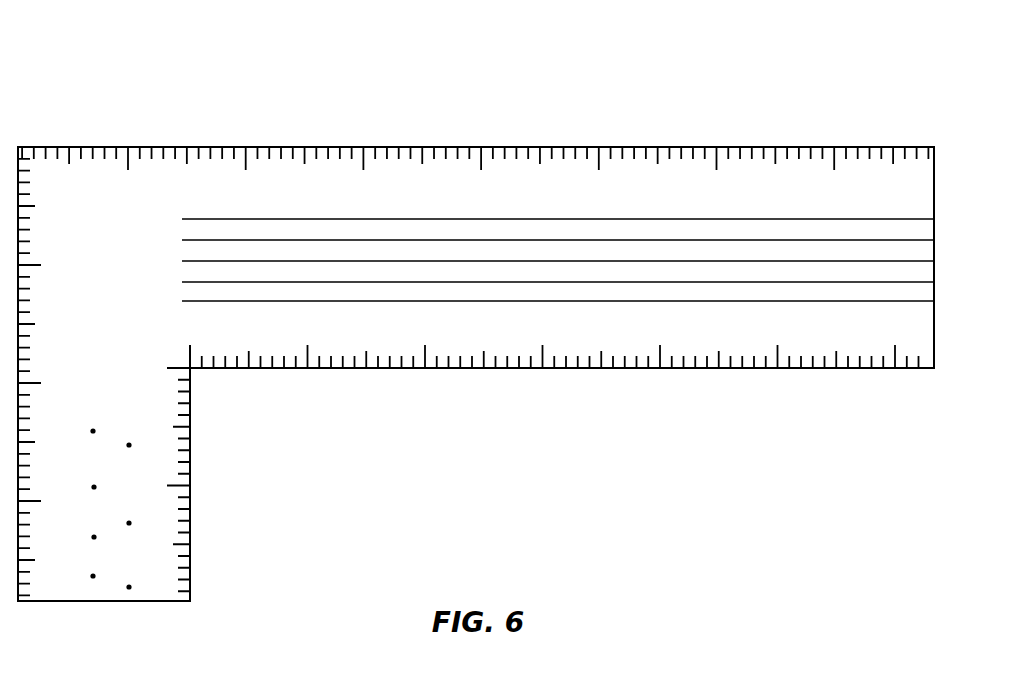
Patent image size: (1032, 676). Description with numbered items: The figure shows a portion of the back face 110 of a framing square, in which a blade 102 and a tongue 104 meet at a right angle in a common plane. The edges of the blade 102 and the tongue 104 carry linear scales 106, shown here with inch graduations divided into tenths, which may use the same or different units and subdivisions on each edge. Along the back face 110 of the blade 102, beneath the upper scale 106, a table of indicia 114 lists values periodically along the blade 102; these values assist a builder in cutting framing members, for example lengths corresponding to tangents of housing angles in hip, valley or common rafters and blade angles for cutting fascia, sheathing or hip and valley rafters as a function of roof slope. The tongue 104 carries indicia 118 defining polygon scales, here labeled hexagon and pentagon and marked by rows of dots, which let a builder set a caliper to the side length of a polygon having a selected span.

The blade 102 is at (318, 130).
The tongue 104 is at (198, 547).
The linear scales 106 is at (662, 147).
The back face 110 is at (403, 190).
The indicia 114 is at (728, 207).
The polygon scale indicia 118 is at (125, 455).